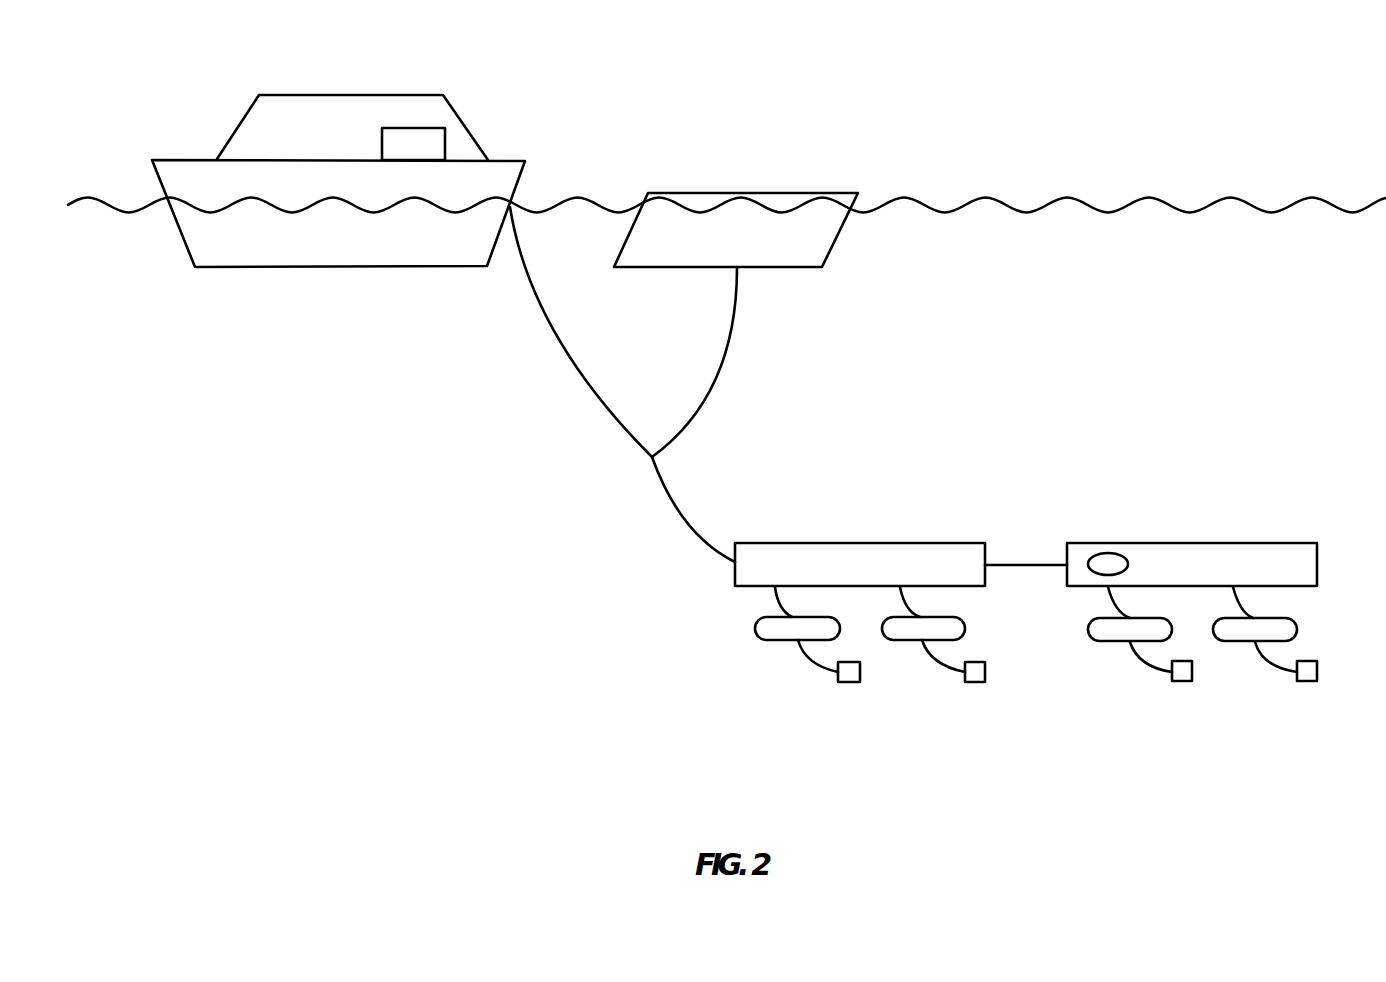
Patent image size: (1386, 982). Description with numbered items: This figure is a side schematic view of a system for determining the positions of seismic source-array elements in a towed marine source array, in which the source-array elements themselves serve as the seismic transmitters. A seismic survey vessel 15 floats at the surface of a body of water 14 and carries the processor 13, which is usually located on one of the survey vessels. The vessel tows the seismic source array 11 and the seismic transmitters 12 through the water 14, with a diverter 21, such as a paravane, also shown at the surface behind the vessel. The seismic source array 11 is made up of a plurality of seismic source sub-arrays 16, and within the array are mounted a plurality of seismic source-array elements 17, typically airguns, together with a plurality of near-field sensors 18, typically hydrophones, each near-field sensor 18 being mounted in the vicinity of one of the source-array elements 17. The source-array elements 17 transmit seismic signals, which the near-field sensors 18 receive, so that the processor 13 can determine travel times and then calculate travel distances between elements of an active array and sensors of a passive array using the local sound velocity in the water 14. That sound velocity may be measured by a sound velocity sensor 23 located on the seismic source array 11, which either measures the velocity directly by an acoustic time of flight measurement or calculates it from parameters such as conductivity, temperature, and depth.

The seismic source array 11 is at (1107, 747).
The seismic transmitter 12 is at (1026, 571).
The processor 13 is at (413, 138).
The body of water 14 is at (375, 397).
The seismic survey vessel 15 is at (273, 112).
The seismic source sub-array 16 is at (1097, 518).
The seismic source-array element 17 is at (943, 628).
The near-field sensor 18 is at (977, 682).
The diverter 21 is at (688, 233).
The sound velocity sensor 23 is at (1103, 567).